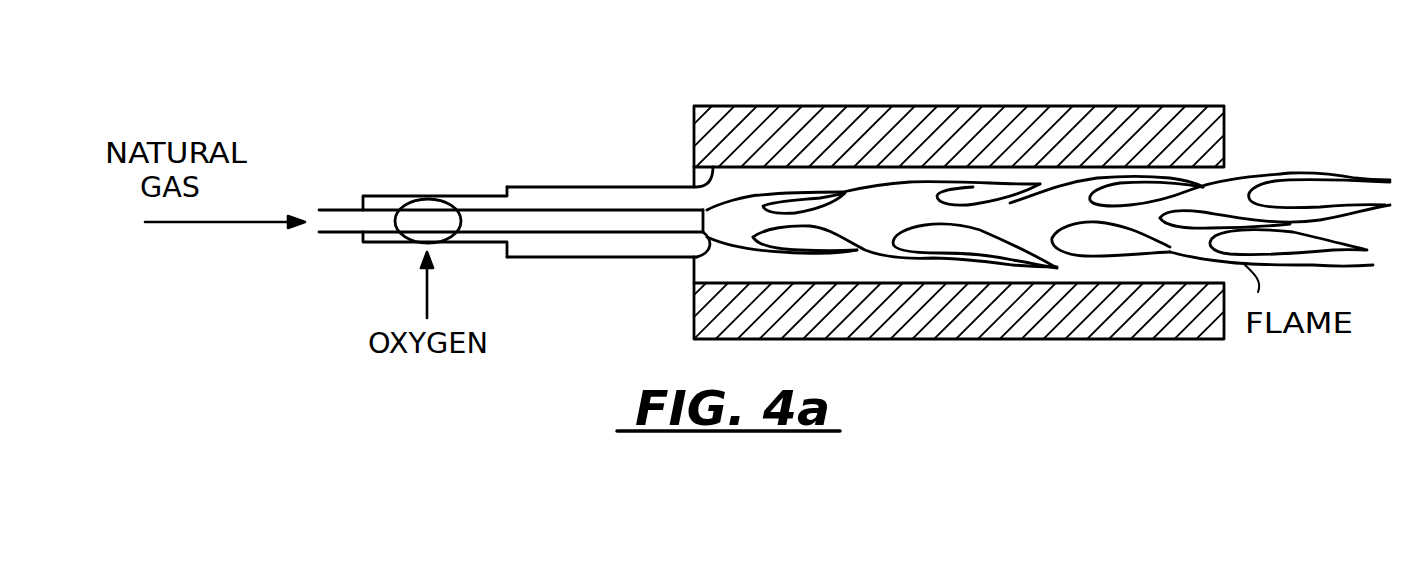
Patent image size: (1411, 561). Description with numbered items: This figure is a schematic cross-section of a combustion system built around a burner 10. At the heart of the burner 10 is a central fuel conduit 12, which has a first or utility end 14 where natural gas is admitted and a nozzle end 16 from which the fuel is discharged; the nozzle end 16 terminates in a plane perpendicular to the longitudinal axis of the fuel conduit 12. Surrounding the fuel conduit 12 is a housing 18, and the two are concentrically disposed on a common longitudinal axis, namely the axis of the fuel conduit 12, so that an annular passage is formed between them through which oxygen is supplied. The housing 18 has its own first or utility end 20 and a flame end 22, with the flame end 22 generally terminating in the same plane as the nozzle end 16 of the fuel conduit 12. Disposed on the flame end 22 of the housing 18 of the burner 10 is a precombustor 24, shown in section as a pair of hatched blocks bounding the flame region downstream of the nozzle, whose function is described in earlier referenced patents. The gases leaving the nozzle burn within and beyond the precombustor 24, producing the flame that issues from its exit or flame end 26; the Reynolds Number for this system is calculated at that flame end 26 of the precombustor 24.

The burner 10 is at (546, 188).
The central fuel conduit 12 is at (342, 234).
The utility end 14 is at (336, 210).
The nozzle end 16 is at (694, 268).
The housing 18 is at (618, 187).
The utility end 20 is at (363, 244).
The flame end 22 is at (715, 167).
The precombustor 24 is at (979, 107).
The flame end 26 is at (1225, 138).